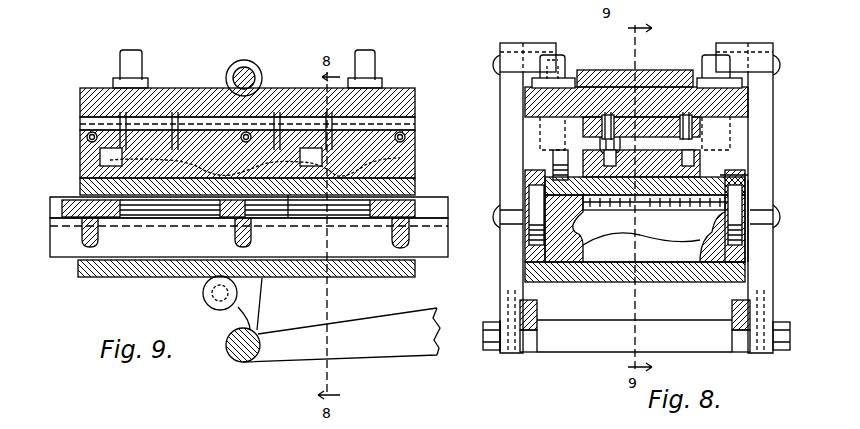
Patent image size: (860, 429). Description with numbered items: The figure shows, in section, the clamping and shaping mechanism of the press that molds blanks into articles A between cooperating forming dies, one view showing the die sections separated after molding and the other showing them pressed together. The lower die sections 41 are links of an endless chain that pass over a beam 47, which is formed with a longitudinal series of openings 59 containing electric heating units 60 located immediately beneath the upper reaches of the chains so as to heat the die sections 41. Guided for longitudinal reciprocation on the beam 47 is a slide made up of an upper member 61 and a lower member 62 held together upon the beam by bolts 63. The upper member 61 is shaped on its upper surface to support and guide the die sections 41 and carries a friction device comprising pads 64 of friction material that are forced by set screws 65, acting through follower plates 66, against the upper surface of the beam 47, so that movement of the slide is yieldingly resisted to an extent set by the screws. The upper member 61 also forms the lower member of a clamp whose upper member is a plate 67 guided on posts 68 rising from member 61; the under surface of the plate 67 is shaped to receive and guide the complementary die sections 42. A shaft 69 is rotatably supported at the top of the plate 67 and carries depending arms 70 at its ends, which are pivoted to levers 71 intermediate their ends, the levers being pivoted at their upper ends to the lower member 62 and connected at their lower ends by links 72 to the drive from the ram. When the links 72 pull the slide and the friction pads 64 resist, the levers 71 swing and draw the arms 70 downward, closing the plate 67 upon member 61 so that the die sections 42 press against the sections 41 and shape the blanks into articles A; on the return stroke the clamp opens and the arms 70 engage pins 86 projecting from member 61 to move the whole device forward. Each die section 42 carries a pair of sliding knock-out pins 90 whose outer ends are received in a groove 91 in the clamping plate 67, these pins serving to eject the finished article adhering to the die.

In FIG. 9, the lower die sections 41 is at (292, 218).
In FIG. 8, the lower die sections 41 is at (588, 160).
In FIG. 9, the complementary die sections 42 is at (150, 130).
In FIG. 8, the complementary die sections 42 is at (600, 135).
In FIG. 9, the beam 47 is at (430, 200).
In FIG. 8, the beam 47 is at (572, 282).
In FIG. 9, the openings 59 is at (415, 198).
In FIG. 8, the openings 59 is at (575, 230).
In FIG. 9, the electric heating units 60 is at (165, 218).
In FIG. 8, the electric heating units 60 is at (652, 222).
In FIG. 9, the upper member of slide 61 is at (80, 184).
In FIG. 8, the upper member of slide 61 is at (745, 192).
In FIG. 9, the lower member of slide 62 is at (98, 278).
In FIG. 8, the lower member of slide 62 is at (665, 283).
In FIG. 8, the bolts 63 is at (525, 192).
In FIG. 8, the friction pads 64 is at (528, 207).
In FIG. 8, the set screws 65 is at (556, 165).
In FIG. 8, the follower plates 66 is at (748, 198).
In FIG. 9, the clamp plate 67 is at (413, 89).
In FIG. 8, the clamp plate 67 is at (662, 87).
In FIG. 9, the posts 68 is at (120, 62).
In FIG. 8, the posts 68 is at (540, 157).
In FIG. 9, the shaft 69 is at (256, 68).
In FIG. 8, the shaft 69 is at (648, 68).
In FIG. 9, the depending arms 70 is at (203, 290).
In FIG. 8, the depending arms 70 is at (500, 135).
In FIG. 9, the levers 71 is at (258, 302).
In FIG. 8, the levers 71 is at (500, 308).
In FIG. 9, the links 72 is at (355, 352).
In FIG. 8, the links 72 is at (545, 334).
In FIG. 8, the pins 86 is at (496, 225).
In FIG. 8, the knock-out pins 90 is at (605, 87).
In FIG. 9, the groove 91 is at (416, 118).
In FIG. 9, the articles A is at (80, 140).
In FIG. 8, the articles A is at (620, 140).